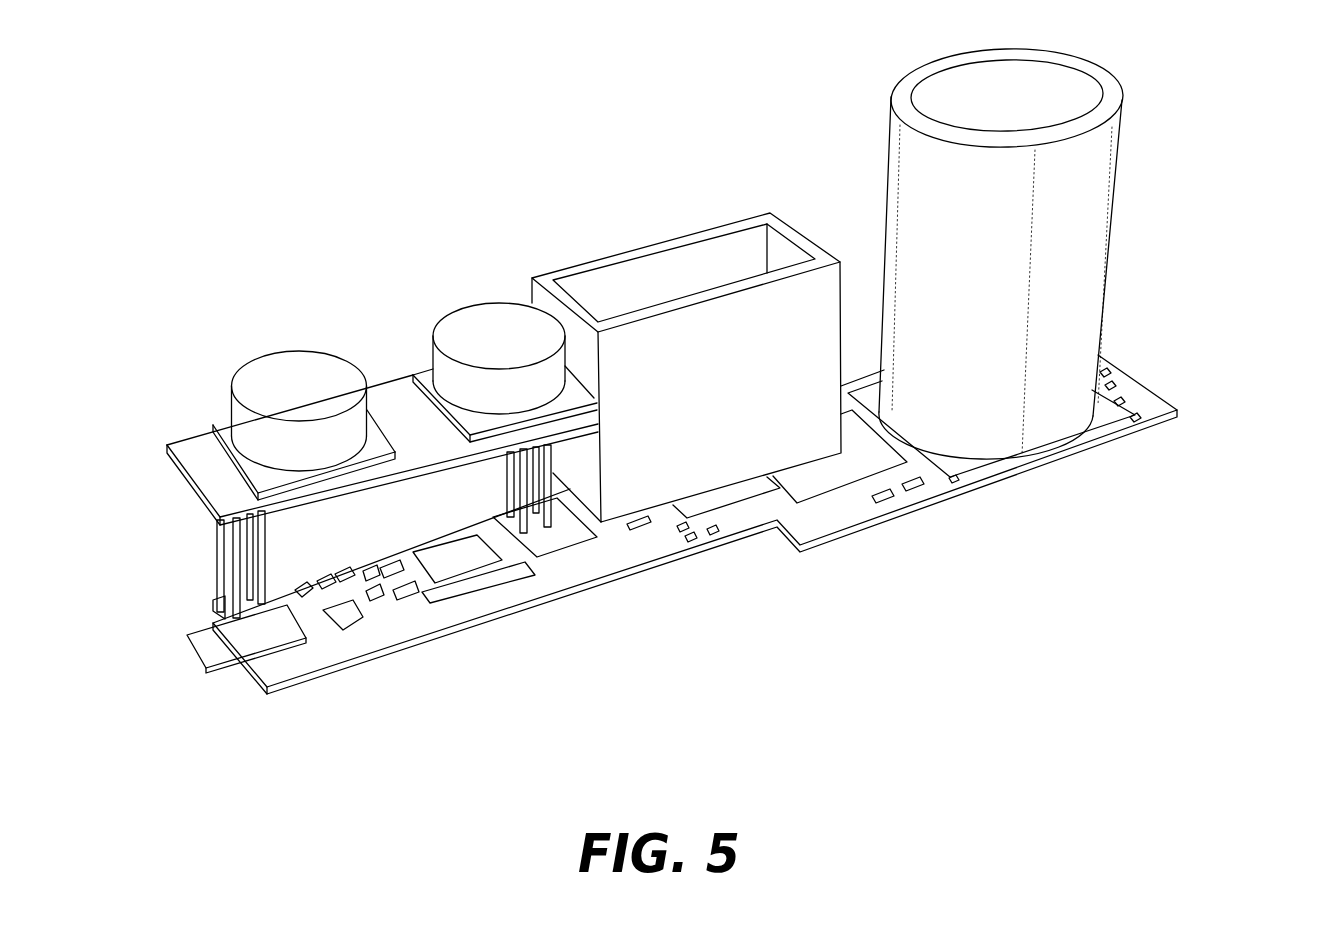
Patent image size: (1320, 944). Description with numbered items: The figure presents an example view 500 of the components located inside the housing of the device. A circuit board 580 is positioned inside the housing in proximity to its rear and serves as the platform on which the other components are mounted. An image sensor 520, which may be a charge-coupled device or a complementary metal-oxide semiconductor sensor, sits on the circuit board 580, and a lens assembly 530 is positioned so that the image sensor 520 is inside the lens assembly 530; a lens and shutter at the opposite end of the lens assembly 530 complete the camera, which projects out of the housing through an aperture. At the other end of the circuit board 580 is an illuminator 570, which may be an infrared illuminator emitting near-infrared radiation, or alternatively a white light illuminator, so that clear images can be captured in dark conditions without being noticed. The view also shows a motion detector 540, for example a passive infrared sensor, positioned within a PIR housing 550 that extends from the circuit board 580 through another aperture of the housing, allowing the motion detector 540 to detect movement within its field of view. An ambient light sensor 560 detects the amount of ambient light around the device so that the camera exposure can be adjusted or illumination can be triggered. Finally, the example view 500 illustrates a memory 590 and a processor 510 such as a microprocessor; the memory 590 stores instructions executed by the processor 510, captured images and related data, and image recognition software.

The example view 500 is at (319, 170).
The processor 510 is at (917, 487).
The image sensor 520 is at (1107, 442).
The lens assembly 530 is at (1105, 272).
The motion detector 540 is at (730, 500).
The PIR housing 550 is at (628, 245).
The ambient light sensor 560 is at (500, 420).
The illuminator 570 is at (232, 383).
The circuit board 580 is at (305, 653).
The memory 590 is at (828, 477).